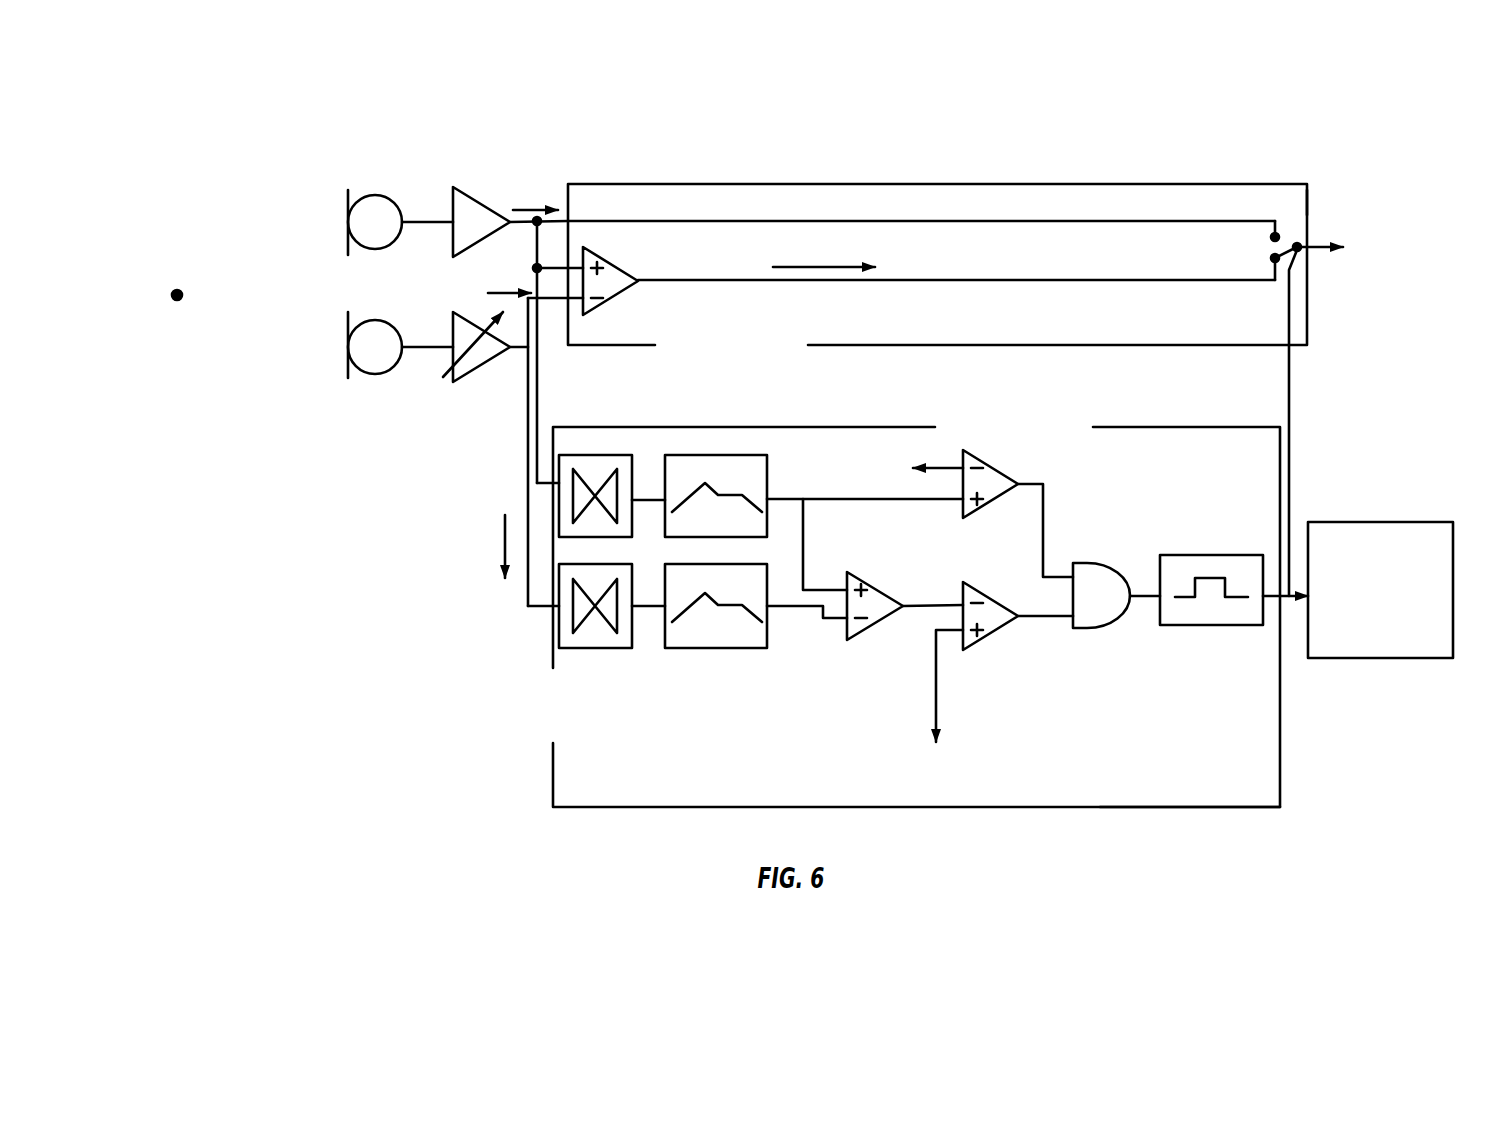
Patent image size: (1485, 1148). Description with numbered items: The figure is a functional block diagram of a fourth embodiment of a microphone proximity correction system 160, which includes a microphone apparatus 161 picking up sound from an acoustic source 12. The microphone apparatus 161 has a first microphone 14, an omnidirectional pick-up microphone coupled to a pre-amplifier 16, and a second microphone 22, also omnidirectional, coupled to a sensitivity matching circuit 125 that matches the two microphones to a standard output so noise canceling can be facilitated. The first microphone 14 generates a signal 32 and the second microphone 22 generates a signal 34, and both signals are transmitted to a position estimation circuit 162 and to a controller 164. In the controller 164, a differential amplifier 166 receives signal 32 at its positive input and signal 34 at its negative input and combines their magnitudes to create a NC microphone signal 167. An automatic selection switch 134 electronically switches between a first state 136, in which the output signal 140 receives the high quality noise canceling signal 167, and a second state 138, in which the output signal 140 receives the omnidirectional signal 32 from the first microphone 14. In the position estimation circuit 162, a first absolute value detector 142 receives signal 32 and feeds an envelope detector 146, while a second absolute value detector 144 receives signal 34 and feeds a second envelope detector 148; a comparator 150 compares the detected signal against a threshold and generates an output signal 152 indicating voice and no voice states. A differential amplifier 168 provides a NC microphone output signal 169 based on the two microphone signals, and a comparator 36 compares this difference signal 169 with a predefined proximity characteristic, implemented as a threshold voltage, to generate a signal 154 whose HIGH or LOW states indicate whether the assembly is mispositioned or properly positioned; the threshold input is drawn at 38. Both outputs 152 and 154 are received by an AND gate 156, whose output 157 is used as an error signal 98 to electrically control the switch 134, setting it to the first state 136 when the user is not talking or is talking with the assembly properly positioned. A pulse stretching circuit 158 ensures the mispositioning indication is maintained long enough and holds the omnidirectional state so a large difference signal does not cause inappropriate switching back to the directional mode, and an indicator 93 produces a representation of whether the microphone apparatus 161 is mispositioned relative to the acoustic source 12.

The acoustic source 12 is at (175, 297).
The first microphone 14 is at (384, 195).
The pre-amplifier 16 is at (478, 193).
The second microphone 22 is at (378, 376).
The sensitivity matching circuit 125 is at (428, 464).
The microphone apparatus 161 is at (239, 432).
The signal 32 is at (533, 207).
The differential amplifier 166 is at (612, 256).
The NC microphone signal 167 is at (820, 265).
The second state 138 is at (1275, 233).
The first state 136 is at (1274, 258).
The automatic selection switch 134 is at (1288, 251).
The controller 164 is at (1310, 202).
The output signal 140 is at (1383, 258).
The error signal 98 is at (1289, 420).
The microphone proximity correction system 160 is at (327, 700).
The position estimation circuit 162 is at (1218, 807).
The signal 34 is at (503, 552).
The first absolute value detector 142 is at (605, 454).
The second absolute value detector 144 is at (559, 622).
The envelope detector 146 is at (722, 454).
The second envelope detector 148 is at (768, 628).
The comparator 150 is at (1006, 466).
The output signal 152 is at (1043, 528).
The differential amplifier 168 is at (864, 572).
The NC microphone output signal 169 is at (926, 604).
The signal 154 is at (1047, 612).
The comparator 36 is at (1007, 621).
The threshold VREF 2 input 38 is at (936, 700).
The AND gate 156 is at (1120, 692).
The output 157 is at (1140, 592).
The pulse stretching circuit 158 is at (1210, 692).
The indicator 93 is at (1390, 658).